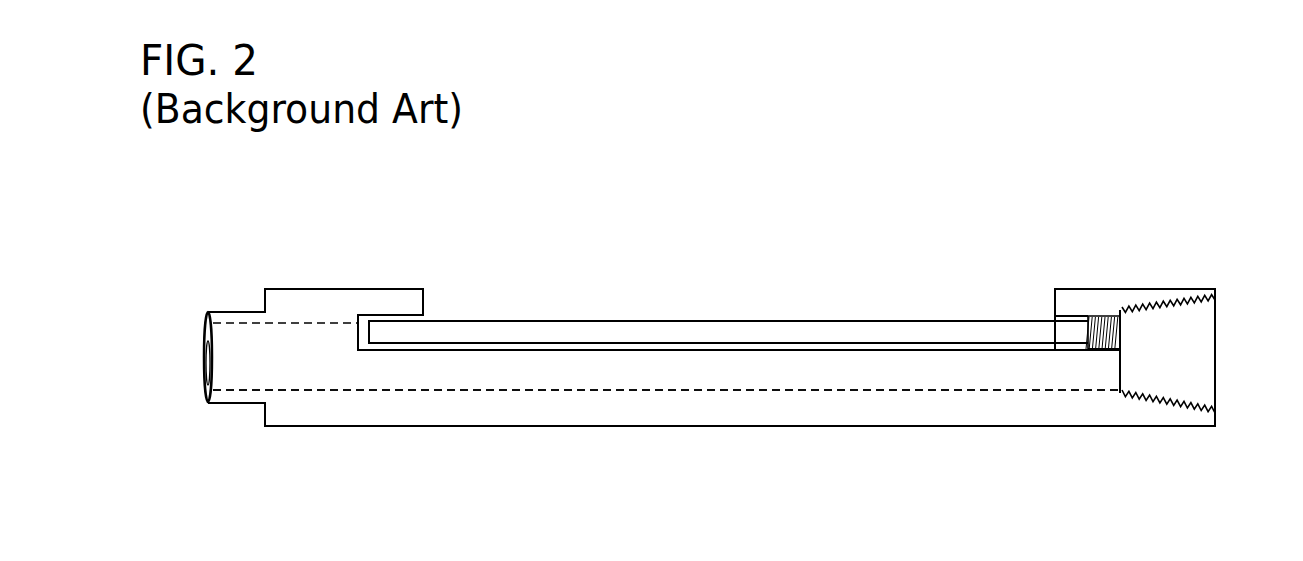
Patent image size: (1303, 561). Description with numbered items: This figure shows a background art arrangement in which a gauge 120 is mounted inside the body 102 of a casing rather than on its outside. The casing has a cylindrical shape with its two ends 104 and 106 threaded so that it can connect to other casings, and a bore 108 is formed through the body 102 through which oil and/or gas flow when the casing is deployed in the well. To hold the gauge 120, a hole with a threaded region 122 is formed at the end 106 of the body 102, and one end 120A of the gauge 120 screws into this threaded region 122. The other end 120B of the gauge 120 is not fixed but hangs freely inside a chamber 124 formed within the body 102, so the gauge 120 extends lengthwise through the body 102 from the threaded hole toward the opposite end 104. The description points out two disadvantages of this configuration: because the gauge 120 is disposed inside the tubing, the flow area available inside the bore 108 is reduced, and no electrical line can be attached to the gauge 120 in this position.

The body 102 is at (376, 425).
The end 104 is at (222, 310).
The end 106 is at (1159, 289).
The bore 108 is at (910, 378).
The gauge 120 is at (683, 321).
The end of gauge 120A is at (1102, 318).
The other end of gauge 120B is at (382, 327).
The threaded region 122 is at (1120, 335).
The chamber 124 is at (393, 318).